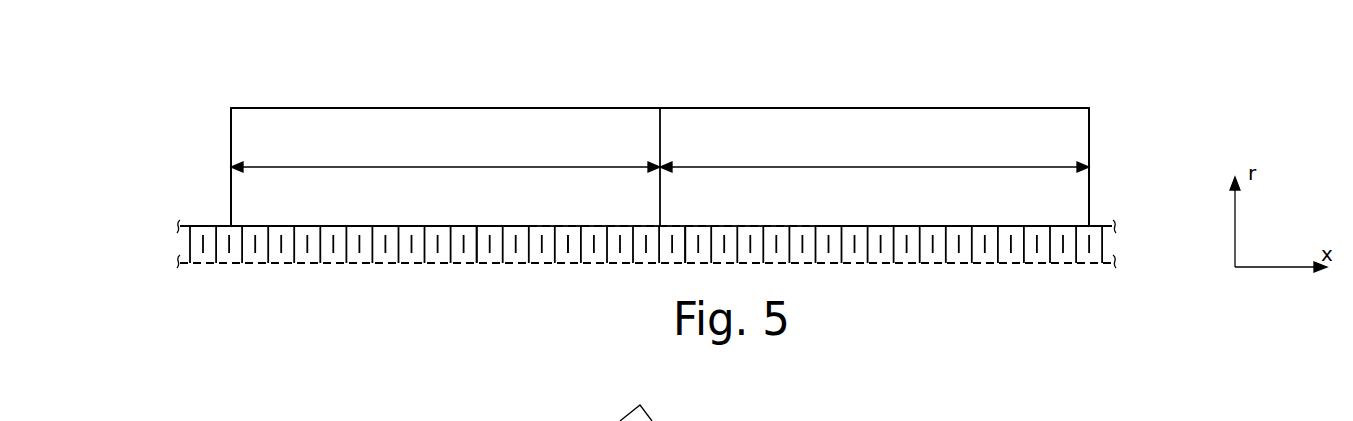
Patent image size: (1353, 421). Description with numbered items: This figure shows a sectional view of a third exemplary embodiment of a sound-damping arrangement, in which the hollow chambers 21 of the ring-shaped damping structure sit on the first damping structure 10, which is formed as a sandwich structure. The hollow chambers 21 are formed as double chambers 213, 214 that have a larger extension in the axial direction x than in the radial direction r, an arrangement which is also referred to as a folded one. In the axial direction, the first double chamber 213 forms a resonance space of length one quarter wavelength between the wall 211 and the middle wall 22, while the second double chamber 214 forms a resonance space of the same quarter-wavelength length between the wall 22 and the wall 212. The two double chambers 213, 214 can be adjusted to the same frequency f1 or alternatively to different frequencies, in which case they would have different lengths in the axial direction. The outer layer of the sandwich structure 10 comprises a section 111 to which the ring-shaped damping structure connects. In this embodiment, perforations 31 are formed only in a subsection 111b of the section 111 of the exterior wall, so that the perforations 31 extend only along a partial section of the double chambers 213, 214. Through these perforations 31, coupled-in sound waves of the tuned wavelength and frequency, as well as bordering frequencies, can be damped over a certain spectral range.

The first damping structure 10 is at (358, 280).
The hollow chamber 21 is at (1059, 108).
The wall 211 is at (230, 130).
The wall 212 is at (1090, 128).
The double chamber 213 is at (483, 128).
The double chamber 214 is at (866, 128).
The wall 22 is at (663, 140).
The section 111 is at (478, 226).
The subsection 111b is at (692, 226).
The perforations 31 is at (575, 226).